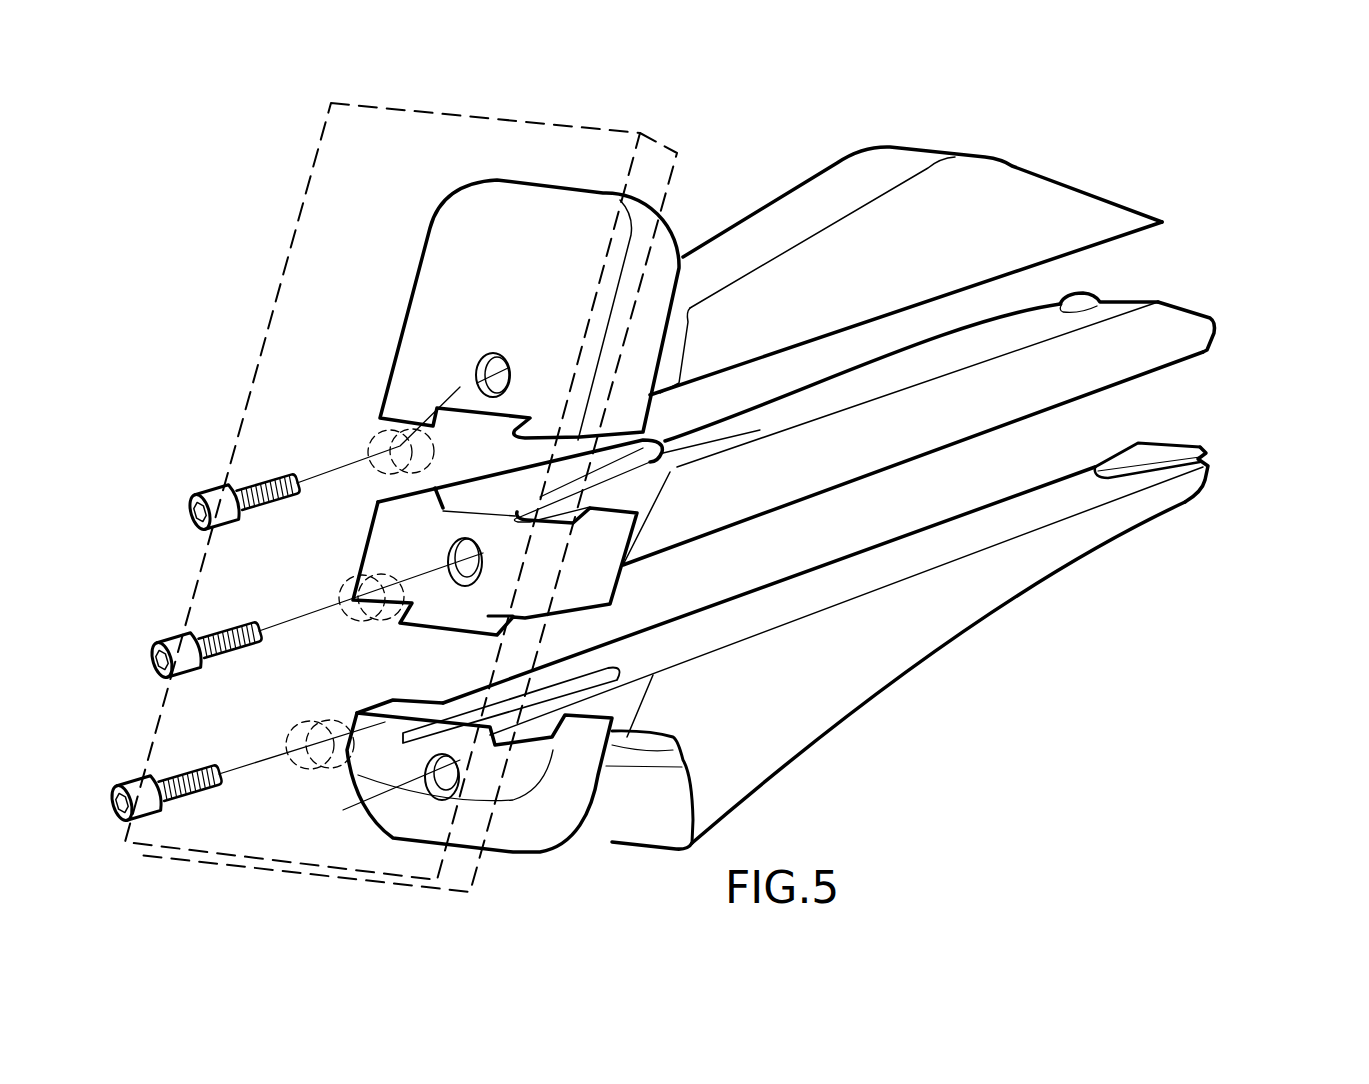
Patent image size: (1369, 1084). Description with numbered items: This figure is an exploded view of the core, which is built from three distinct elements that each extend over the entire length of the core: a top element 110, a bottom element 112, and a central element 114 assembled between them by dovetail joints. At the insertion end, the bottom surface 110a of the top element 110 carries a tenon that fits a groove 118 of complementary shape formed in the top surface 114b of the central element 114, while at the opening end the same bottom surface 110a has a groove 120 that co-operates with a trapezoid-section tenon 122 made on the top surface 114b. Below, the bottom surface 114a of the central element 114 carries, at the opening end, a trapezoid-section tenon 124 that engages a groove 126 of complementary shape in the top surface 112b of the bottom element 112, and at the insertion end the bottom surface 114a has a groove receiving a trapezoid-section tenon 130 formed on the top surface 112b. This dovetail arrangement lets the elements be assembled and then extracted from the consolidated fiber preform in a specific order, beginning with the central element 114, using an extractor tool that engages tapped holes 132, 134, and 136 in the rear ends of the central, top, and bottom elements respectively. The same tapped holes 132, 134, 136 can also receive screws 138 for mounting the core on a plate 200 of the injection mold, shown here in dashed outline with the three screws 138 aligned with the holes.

The top element 110 is at (945, 263).
The bottom surface of the top element 110a is at (887, 331).
The bottom element 112 is at (888, 622).
The top surface of the bottom element 112b is at (856, 568).
The central element 114 is at (849, 403).
The bottom surface of the central element 114a is at (1012, 430).
The top surface of the central element 114b is at (997, 338).
The groove 118 is at (1106, 308).
The groove 120 is at (529, 322).
The tenon 122 is at (648, 434).
The tenon 124 is at (495, 581).
The groove 126 is at (481, 756).
The tenon 130 is at (1152, 448).
The tapped hole 132 is at (446, 548).
The tapped hole 134 is at (487, 358).
The tapped hole 136 is at (437, 792).
The screws 138 is at (192, 509).
The plate 200 is at (306, 191).